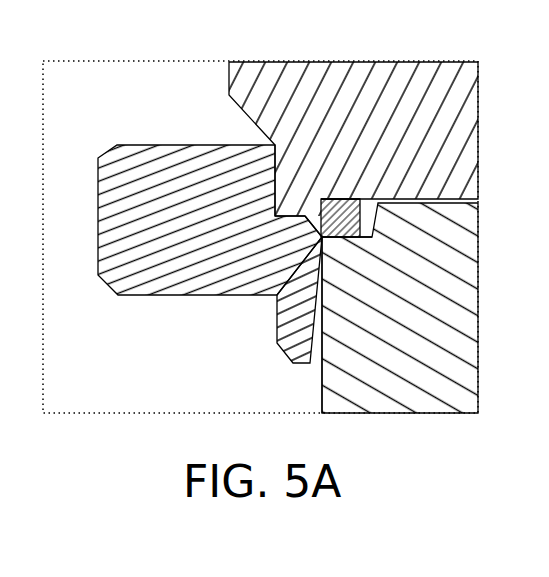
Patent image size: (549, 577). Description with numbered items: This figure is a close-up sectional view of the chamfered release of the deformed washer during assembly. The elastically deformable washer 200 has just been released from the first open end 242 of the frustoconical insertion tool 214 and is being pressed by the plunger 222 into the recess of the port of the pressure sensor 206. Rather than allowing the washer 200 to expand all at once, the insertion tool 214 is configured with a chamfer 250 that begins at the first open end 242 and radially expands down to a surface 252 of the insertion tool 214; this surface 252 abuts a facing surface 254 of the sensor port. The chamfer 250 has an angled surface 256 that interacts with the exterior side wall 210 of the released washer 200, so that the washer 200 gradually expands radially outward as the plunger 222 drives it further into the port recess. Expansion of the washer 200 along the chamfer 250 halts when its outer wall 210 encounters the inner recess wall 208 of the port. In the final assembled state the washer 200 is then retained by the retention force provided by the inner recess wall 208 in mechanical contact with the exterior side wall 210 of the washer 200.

The pressure sensor 206 is at (457, 93).
The frustoconical insertion tool 214 is at (118, 170).
The angled surface 256 is at (316, 249).
The plunger 222 is at (416, 338).
The washer 200 is at (350, 198).
The facing surface 254 is at (274, 215).
The surface of the insertion tool 252 is at (303, 214).
The inner recess wall 208 is at (319, 238).
The exterior side wall 210 is at (336, 198).
The chamfer 250 is at (335, 247).
The first open end 242 is at (328, 246).